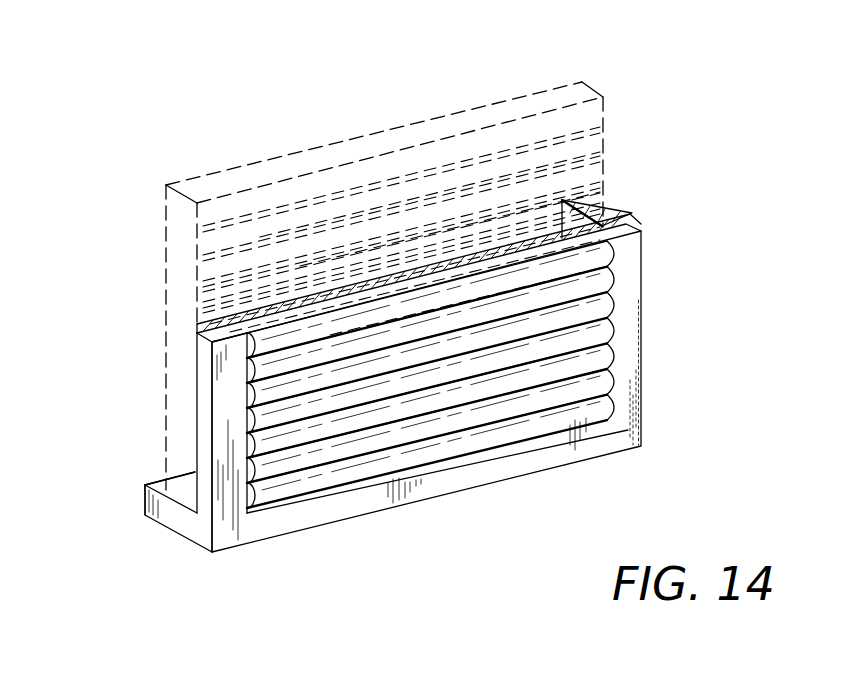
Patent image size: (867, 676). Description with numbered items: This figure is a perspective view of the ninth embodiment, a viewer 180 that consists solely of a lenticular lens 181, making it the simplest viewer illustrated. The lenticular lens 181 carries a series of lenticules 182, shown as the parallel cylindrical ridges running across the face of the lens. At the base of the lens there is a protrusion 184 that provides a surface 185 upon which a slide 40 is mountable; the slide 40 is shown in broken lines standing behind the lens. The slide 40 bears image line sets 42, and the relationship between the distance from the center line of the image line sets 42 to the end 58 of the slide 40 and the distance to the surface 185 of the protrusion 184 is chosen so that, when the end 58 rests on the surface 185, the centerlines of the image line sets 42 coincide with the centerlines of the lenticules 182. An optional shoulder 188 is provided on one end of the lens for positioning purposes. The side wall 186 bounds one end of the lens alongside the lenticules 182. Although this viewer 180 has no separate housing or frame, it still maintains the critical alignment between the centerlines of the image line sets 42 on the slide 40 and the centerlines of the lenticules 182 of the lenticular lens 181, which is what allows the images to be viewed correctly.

The slide 40 is at (584, 84).
The image line sets 42 is at (270, 212).
The end of the slide 58 is at (150, 520).
The viewer 180 is at (656, 395).
The lenticular lens 181 is at (358, 516).
The lenticules 182 is at (587, 415).
The protrusion 184 is at (183, 538).
The surface 185 is at (163, 478).
The left side wall 186 is at (197, 412).
The shoulder 188 is at (612, 218).